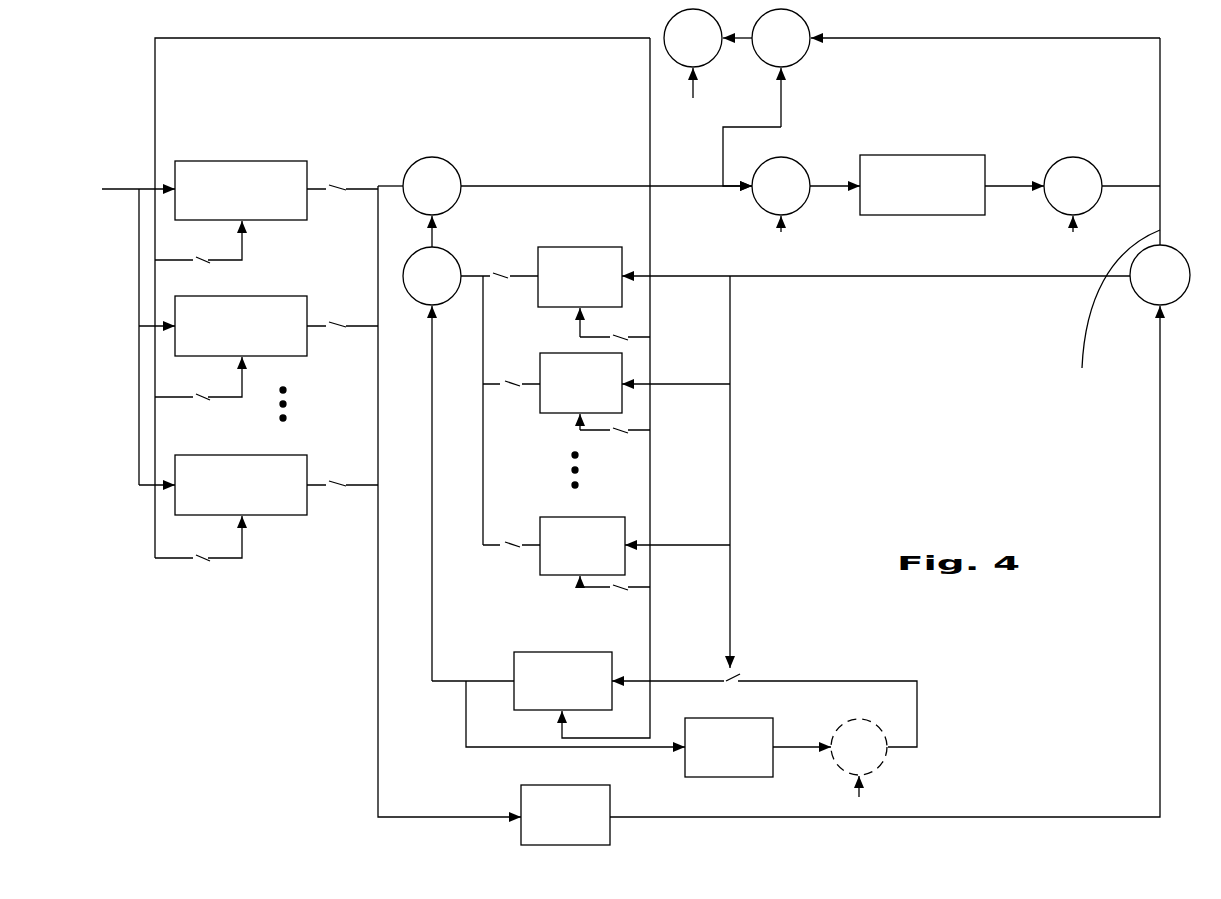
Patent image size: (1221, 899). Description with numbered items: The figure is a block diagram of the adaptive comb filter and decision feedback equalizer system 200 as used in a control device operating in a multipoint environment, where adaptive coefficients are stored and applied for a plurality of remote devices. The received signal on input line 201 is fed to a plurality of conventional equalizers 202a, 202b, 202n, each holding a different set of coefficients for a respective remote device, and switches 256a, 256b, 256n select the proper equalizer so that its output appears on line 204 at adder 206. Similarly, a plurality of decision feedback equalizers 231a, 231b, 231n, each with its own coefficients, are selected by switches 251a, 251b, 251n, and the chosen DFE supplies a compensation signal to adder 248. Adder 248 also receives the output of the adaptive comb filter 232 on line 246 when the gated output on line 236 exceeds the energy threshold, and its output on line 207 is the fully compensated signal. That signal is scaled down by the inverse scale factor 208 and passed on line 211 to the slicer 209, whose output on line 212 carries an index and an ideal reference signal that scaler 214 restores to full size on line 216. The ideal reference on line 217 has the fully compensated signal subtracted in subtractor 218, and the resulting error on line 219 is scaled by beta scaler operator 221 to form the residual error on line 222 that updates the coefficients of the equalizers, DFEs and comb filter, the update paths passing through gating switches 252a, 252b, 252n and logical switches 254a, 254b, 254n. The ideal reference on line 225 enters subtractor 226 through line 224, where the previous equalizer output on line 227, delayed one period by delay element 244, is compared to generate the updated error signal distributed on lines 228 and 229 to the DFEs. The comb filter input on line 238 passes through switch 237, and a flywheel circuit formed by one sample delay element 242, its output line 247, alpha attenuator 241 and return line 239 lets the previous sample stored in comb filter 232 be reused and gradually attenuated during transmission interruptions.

The adaptive comb filter and decision feedback equalizer system 200 is at (143, 52).
The input signal line 201 is at (117, 188).
The equalizer 202a is at (224, 217).
The equalizer 202b is at (224, 352).
The equalizer 202n is at (224, 511).
The equalizer output line 204 is at (358, 186).
The adder 206 is at (433, 157).
The fully compensated signal line 207 is at (527, 188).
The 1/scale factor 208 is at (783, 157).
The slicer 209 is at (901, 212).
The slicer input line 211 is at (835, 187).
The slicer output line 212 is at (1013, 187).
The scaler 214 is at (1073, 157).
The scaler output line 216 is at (1115, 184).
The ideal reference signal line 217 is at (930, 40).
The subtractor 218 is at (806, 60).
The error signal line 219 is at (727, 48).
The beta scaler operator 221 is at (666, 22).
The residual error signal line 222 is at (514, 40).
The subtractor input line 224 is at (1160, 228).
The ideal reference signal line 225 is at (1113, 312).
The subtractor 226 is at (1140, 297).
The previous equalizer output line 227 is at (378, 228).
The error signal distribution line 228 is at (932, 277).
The updated error signal line 229 is at (732, 475).
The decision feedback equalizer 231a is at (586, 303).
The decision feedback equalizer 231b is at (589, 409).
The decision feedback equalizer 231n is at (591, 571).
The adaptive comb filter 232 is at (549, 710).
The adaptive comb filter output line 236 is at (497, 680).
The switch 237 is at (737, 673).
The adaptive comb filter input line 238 is at (702, 680).
The flywheel output line 239 is at (875, 680).
The alpha attenuator 241 is at (884, 767).
The one sample delay element 242 is at (723, 774).
The delay element 244 is at (561, 841).
The adaptive comb filter output line 246 is at (430, 458).
The delay element output line 247 is at (800, 745).
The adder 248 is at (443, 250).
The switch 251a is at (494, 282).
The switch 251b is at (513, 390).
The switch 251n is at (512, 550).
The gating switch 252a is at (622, 336).
The gating switch 252b is at (625, 430).
The gating switch 252n is at (620, 590).
The logical switch 254a is at (198, 262).
The logical switch 254b is at (198, 398).
The logical switch 254n is at (200, 562).
The switch 256a is at (333, 185).
The switch 256b is at (333, 326).
The switch 256n is at (334, 487).